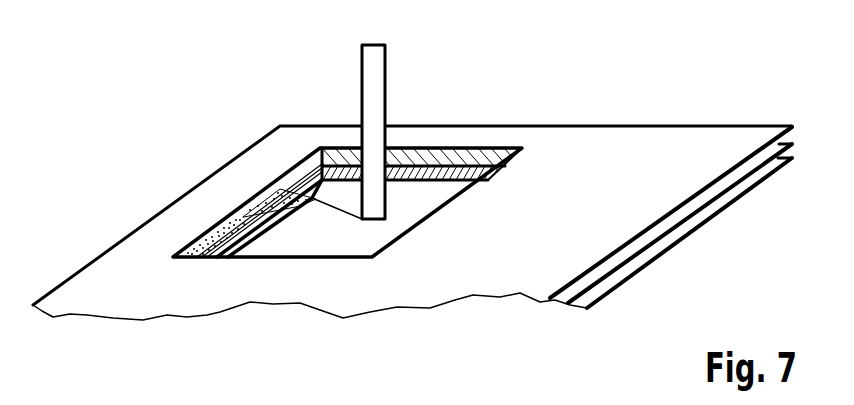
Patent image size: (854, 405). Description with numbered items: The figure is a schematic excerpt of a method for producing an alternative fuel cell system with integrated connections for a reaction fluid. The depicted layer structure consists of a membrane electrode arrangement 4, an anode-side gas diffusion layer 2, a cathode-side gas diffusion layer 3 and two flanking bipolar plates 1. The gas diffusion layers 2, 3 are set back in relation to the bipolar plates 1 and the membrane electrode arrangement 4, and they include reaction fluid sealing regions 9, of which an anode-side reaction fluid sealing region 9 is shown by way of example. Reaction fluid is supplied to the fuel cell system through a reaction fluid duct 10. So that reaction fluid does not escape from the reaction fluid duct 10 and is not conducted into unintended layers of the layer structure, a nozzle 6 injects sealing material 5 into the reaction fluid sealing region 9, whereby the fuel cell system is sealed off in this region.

The bipolar plate 1 is at (748, 135).
The anode-side gas diffusion layer 2 is at (483, 157).
The cathode-side gas diffusion layer 3 is at (447, 170).
The membrane electrode arrangement 4 is at (735, 188).
The sealing material 5 is at (240, 207).
The nozzle 6 is at (335, 197).
The reaction fluid sealing region 9 is at (308, 165).
The reaction fluid duct 10 is at (400, 200).